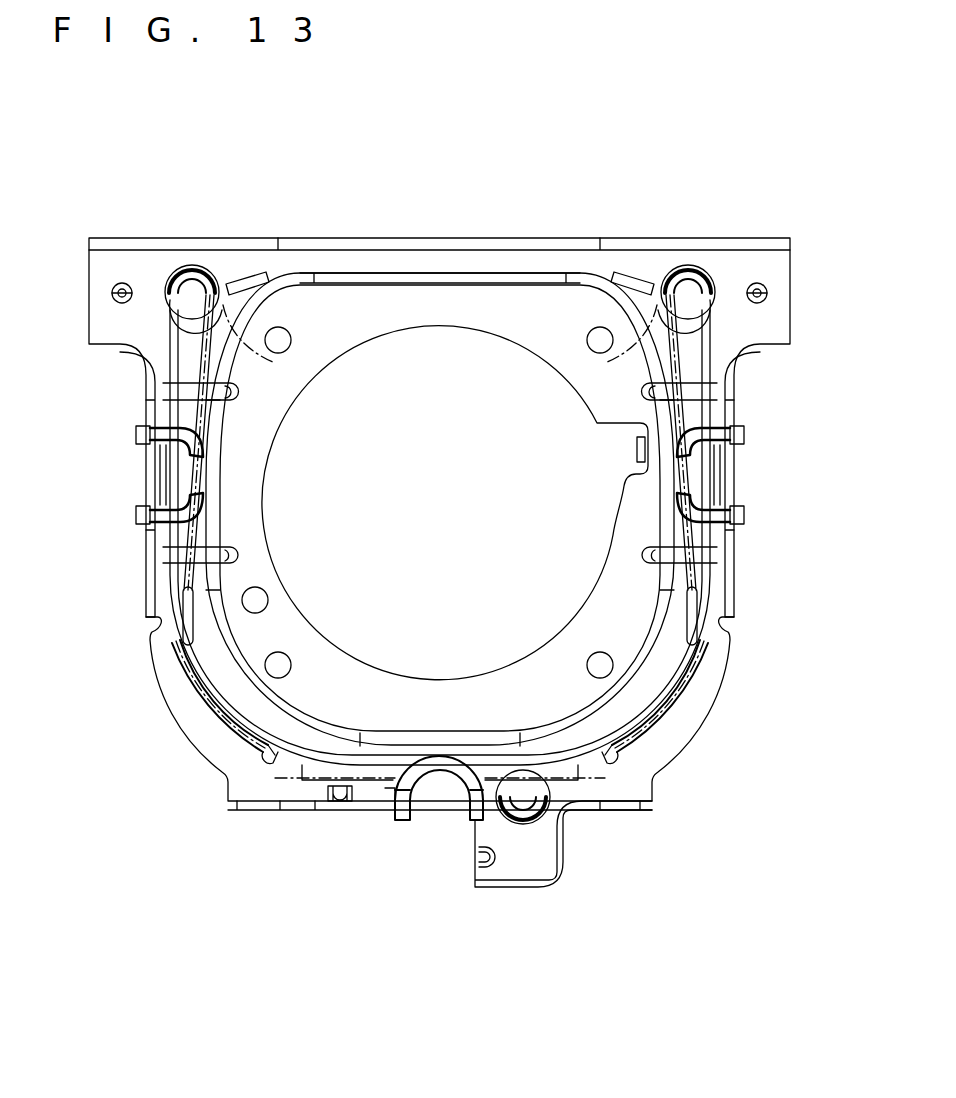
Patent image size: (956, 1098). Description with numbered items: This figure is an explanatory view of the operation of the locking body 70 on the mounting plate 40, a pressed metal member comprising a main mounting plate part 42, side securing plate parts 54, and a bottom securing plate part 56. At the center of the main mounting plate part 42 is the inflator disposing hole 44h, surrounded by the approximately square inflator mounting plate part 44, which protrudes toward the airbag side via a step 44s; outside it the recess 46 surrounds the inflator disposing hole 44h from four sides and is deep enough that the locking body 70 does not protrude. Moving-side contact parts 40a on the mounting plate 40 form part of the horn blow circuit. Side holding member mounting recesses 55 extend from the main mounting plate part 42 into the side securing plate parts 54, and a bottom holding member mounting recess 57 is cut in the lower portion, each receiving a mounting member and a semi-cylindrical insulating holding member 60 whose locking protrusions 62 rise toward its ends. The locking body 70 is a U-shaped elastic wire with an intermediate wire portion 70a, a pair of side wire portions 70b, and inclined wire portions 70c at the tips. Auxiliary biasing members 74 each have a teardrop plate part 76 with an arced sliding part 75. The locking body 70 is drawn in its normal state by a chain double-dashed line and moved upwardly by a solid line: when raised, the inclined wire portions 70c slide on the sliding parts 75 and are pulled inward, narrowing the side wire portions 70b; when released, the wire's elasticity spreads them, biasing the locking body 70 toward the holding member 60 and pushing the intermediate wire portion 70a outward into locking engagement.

The mounting plate 40 is at (432, 214).
The moving-side contact part 40a is at (112, 293).
The main mounting plate part 42 is at (778, 328).
The inflator mounting plate part 44 is at (338, 290).
The step 44s is at (522, 270).
The inflator disposing hole 44h is at (433, 333).
The recess 46 is at (660, 695).
The side securing plate part 54 is at (144, 410).
The side holding member mounting recess 55 is at (187, 463).
The bottom securing plate part 56 is at (350, 802).
The bottom holding member mounting recess 57 is at (448, 758).
The holding member 60 is at (136, 516).
The locking protrusion 62 is at (160, 530).
The locking body 70 is at (585, 760).
The intermediate wire portion 70a is at (292, 766).
The side wire portion 70b is at (212, 527).
The inclined wire portion 70c is at (247, 262).
The auxiliary biasing member 74 is at (190, 262).
The sliding part 75 is at (143, 262).
The plate part 76 is at (167, 306).